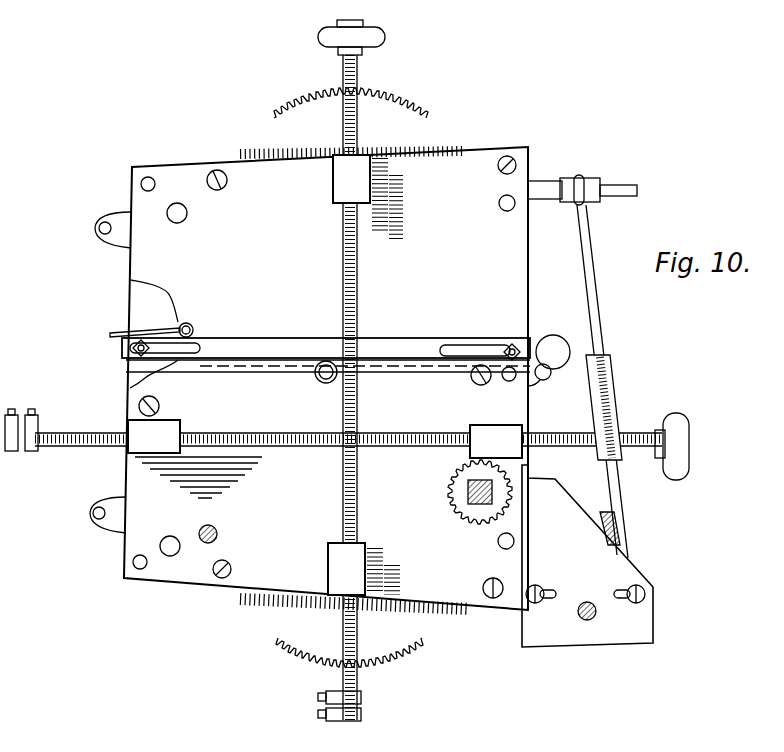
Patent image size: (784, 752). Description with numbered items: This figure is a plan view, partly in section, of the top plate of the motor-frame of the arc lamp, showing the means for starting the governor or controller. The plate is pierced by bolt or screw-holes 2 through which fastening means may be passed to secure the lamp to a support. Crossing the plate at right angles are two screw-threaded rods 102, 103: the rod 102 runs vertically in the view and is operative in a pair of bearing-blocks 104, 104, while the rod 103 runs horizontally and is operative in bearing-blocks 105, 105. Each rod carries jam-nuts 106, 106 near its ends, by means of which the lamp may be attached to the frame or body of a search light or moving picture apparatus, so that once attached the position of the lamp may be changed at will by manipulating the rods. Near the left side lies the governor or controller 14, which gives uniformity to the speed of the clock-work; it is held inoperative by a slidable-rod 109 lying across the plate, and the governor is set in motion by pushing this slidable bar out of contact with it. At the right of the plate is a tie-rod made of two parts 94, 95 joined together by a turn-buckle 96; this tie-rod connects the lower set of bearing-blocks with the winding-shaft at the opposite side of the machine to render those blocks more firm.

The bolt or screw-holes 2 is at (104, 235).
The governor or controller 14 is at (113, 333).
The tie-rod part 94 is at (622, 493).
The tie-rod part 95 is at (592, 298).
The turn-buckle 96 is at (615, 406).
The screw-threaded rod 102 is at (358, 272).
The screw-threaded rod 103 is at (266, 432).
The bearing-blocks 104 is at (352, 177).
The bearing-blocks 105 is at (170, 426).
The jam-nuts 106 is at (25, 455).
The slidable-rod 109 is at (262, 338).